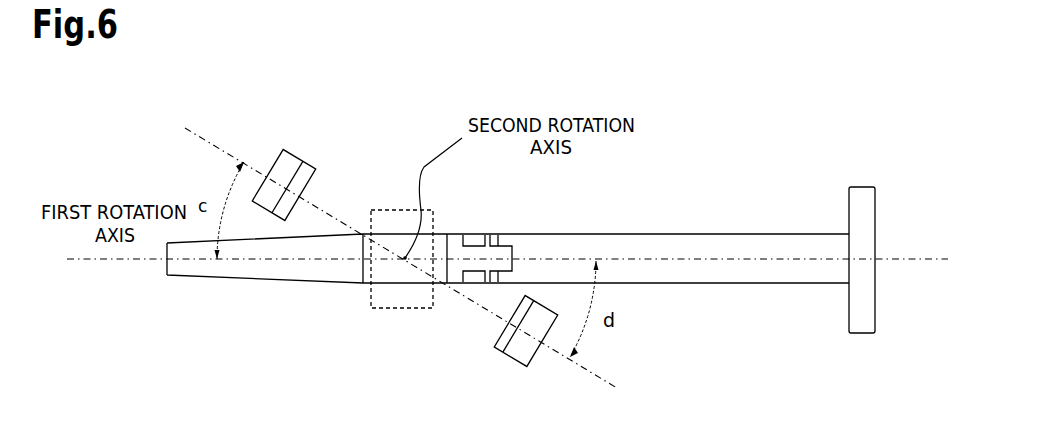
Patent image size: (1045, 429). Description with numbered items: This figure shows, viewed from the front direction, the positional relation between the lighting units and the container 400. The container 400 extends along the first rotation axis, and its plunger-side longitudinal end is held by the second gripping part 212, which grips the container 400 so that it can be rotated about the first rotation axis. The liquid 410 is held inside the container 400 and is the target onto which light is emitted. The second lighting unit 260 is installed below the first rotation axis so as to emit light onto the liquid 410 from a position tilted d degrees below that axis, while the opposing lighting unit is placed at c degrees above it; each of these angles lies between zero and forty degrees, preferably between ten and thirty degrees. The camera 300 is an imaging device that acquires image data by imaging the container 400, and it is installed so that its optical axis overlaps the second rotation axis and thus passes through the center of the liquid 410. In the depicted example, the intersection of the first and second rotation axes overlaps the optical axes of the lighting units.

The second gripping part 212 is at (283, 151).
The second lighting unit 260 is at (528, 361).
The camera 300 is at (404, 308).
The container 400 is at (715, 234).
The liquid 410 is at (438, 242).